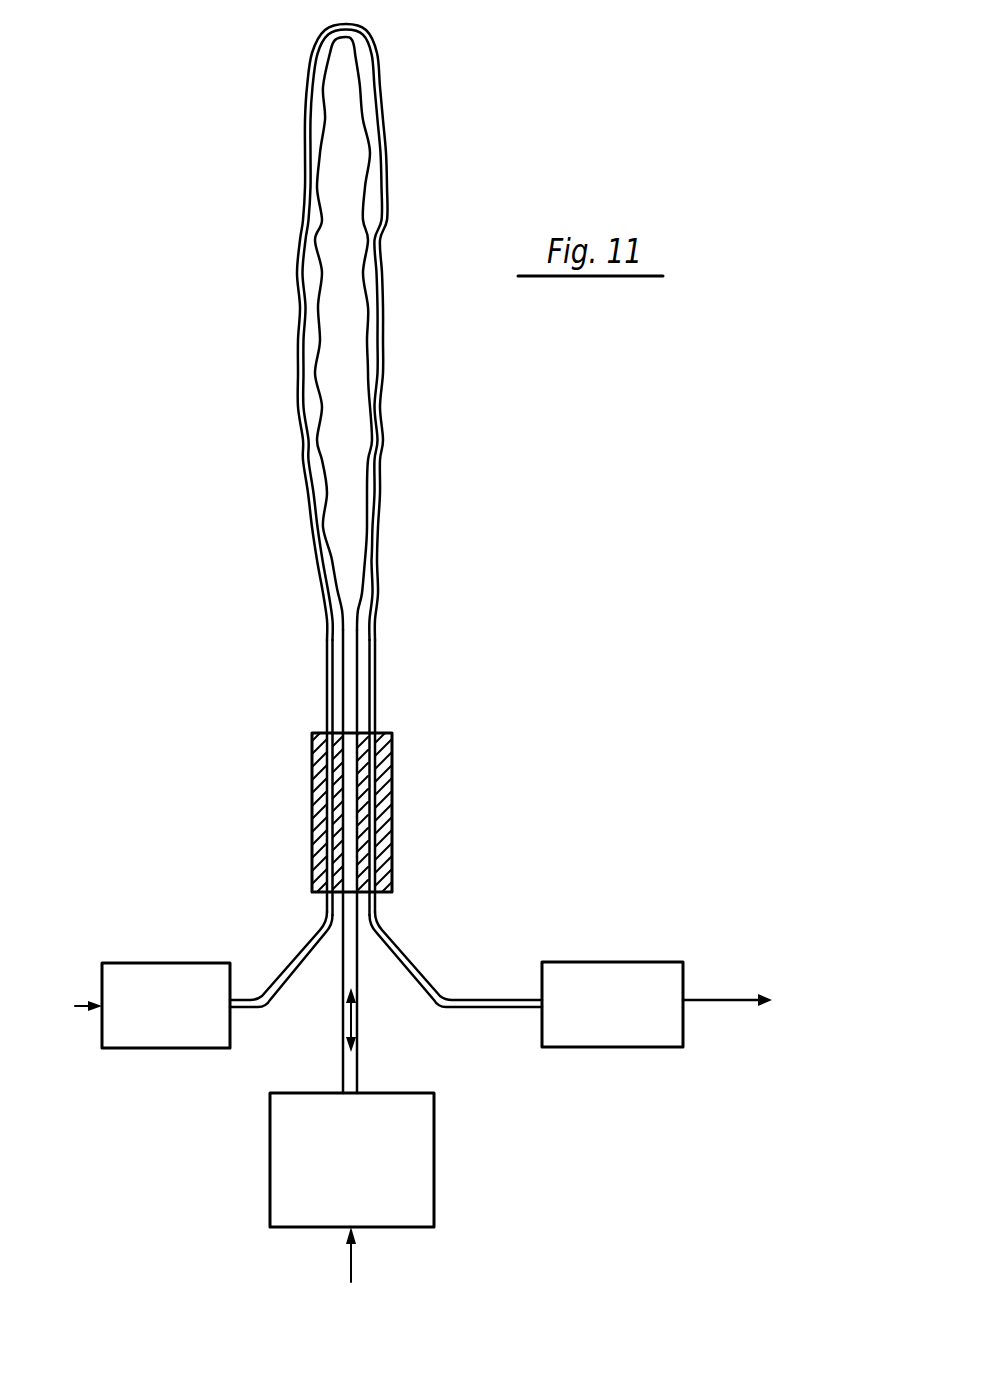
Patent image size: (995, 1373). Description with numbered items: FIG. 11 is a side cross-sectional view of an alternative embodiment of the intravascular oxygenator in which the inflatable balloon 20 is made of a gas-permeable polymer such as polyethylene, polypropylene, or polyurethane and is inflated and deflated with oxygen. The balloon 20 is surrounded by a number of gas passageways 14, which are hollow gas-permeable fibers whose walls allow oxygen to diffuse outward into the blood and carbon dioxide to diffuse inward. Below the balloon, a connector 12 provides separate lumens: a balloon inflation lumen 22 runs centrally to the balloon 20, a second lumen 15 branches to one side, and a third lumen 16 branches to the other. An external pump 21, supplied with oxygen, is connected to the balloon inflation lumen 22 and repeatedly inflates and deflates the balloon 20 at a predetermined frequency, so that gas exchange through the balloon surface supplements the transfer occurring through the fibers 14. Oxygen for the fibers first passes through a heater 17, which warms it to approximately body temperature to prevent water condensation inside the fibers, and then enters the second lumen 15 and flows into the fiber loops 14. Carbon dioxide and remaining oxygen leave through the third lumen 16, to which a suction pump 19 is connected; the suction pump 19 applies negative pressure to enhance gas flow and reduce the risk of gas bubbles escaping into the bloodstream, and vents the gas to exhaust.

The connector 12 is at (312, 783).
The gas passageways 14 is at (305, 157).
The second lumen 15 is at (298, 955).
The third lumen 16 is at (421, 972).
The heater 17 is at (163, 963).
The suction pump 19 is at (616, 962).
The inflatable balloon 20 is at (320, 220).
The external pump 21 is at (434, 1185).
The balloon inflation lumen 22 is at (357, 650).